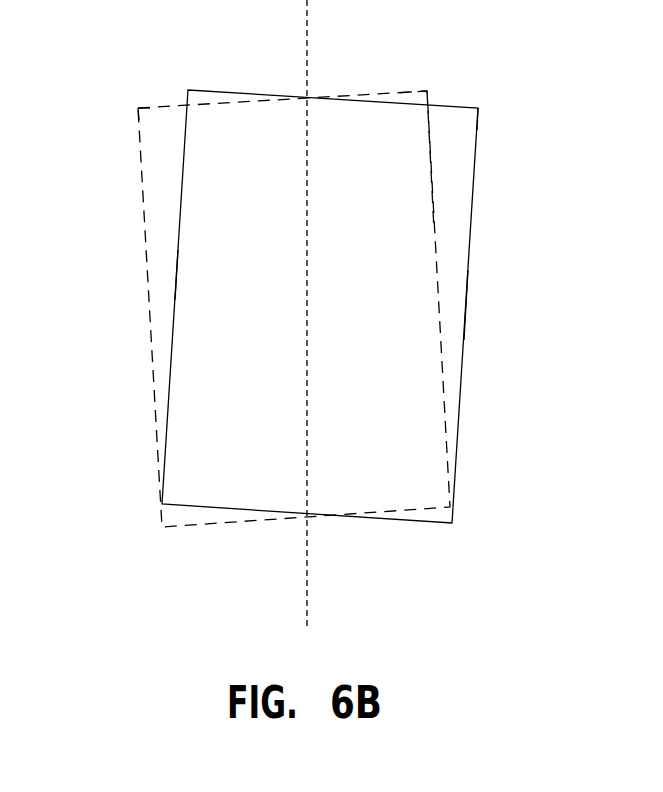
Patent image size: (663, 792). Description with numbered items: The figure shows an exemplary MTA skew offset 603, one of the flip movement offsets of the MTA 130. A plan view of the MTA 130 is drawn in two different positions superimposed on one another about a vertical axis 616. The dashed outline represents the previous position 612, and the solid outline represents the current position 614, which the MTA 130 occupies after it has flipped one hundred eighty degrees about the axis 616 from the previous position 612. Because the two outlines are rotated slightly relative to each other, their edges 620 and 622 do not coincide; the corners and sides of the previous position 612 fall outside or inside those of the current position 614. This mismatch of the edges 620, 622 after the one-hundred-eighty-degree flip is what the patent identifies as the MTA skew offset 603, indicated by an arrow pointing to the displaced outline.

The MTA 130 is at (386, 542).
The MTA skew offset 603 is at (148, 84).
The previous position 612 is at (433, 213).
The current position 614 is at (466, 315).
The axis 616 is at (309, 27).
The edge 620 is at (137, 110).
The edge 622 is at (177, 296).